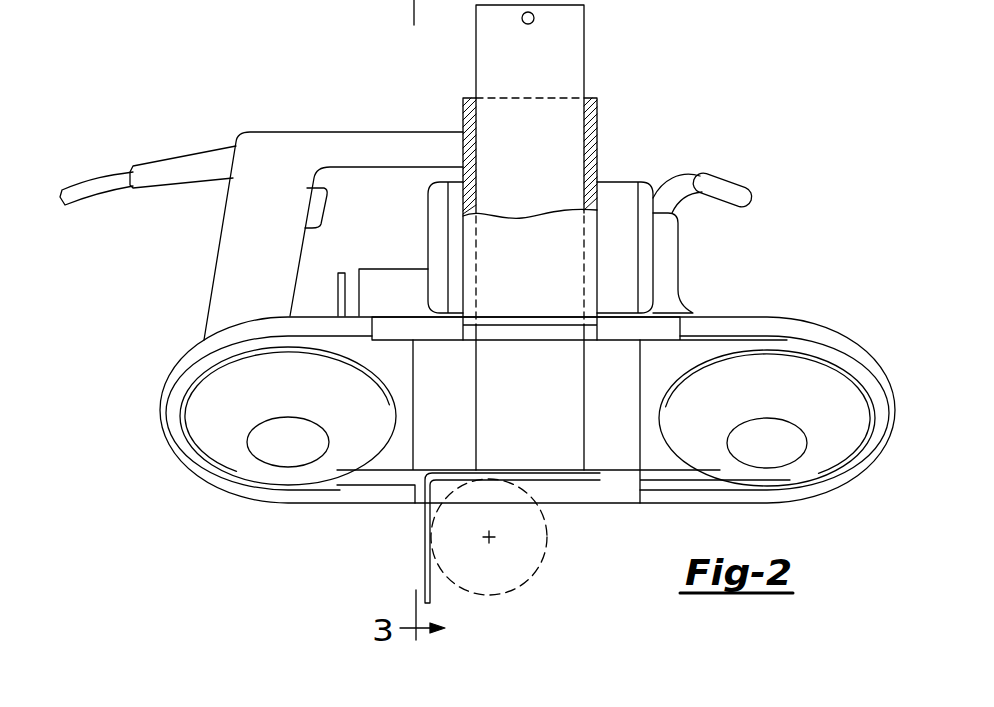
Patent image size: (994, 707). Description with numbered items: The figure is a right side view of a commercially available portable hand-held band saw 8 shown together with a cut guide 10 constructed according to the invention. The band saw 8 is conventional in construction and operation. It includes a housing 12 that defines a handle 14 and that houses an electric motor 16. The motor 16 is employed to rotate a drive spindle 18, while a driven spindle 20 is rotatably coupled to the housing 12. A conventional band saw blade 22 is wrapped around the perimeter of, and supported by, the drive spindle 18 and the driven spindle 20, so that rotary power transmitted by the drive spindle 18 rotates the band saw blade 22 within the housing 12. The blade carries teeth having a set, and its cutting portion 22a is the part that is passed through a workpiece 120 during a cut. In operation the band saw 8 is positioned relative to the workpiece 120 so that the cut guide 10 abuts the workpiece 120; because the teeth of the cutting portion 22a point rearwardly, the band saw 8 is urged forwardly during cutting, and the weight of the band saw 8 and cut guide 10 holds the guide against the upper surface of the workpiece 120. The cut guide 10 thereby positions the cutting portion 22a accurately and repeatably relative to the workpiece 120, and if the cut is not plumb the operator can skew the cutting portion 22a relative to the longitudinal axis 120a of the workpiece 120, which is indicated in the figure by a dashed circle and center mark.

The band saw 8 is at (770, 243).
The cut guide 10 is at (670, 57).
The housing 12 is at (810, 333).
The handle 14 is at (254, 148).
The electric motor 16 is at (625, 267).
The drive spindle 18 is at (288, 443).
The driven spindle 20 is at (788, 450).
The band saw blade 22 is at (428, 330).
The cutting portion 22a is at (440, 483).
The workpiece 120 is at (543, 513).
The longitudinal axis 120a is at (493, 540).